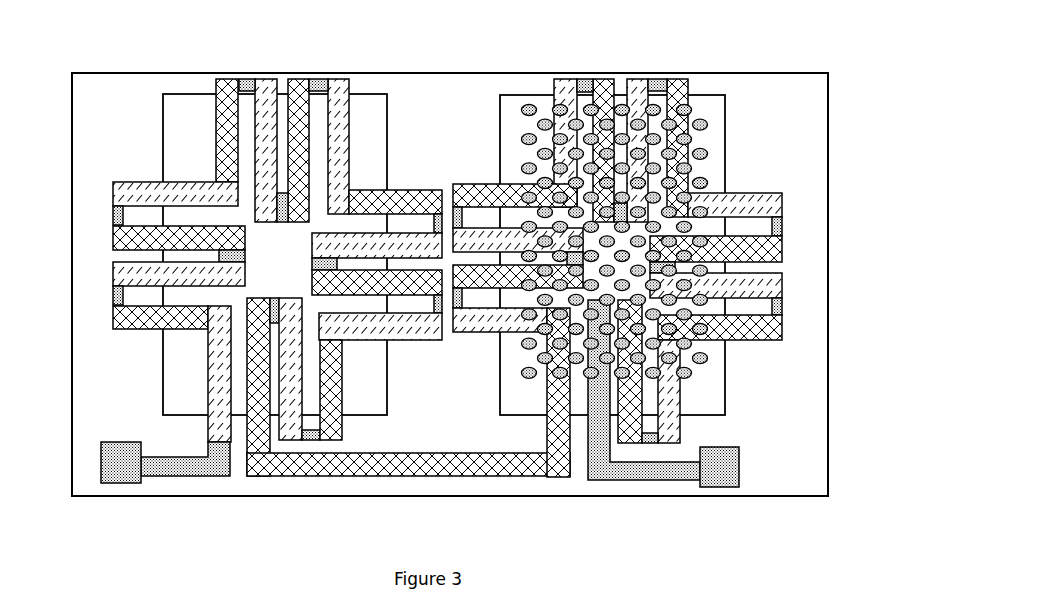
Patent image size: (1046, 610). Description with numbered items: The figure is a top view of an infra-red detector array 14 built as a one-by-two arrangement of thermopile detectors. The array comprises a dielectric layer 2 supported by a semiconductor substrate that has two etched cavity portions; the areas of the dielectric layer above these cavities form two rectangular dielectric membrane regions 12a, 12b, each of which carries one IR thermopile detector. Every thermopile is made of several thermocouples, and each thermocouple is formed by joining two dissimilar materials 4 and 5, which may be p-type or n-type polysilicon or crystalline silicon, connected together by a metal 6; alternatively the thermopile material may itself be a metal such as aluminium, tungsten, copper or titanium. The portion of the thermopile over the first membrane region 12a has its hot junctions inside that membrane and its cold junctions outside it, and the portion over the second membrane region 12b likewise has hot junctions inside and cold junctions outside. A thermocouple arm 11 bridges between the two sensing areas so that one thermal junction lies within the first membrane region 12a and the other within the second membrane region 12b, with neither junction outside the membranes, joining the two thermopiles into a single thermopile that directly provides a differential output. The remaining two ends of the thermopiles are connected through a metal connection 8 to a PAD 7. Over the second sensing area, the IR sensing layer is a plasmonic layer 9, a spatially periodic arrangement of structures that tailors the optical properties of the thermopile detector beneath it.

The dielectric layer 2 is at (812, 128).
The first thermocouple material 4 is at (128, 320).
The second thermocouple material 5 is at (425, 327).
The metal 6 is at (115, 298).
The PAD 7 is at (122, 460).
The metal connection 8 is at (198, 472).
The plasmonic layer 9 is at (528, 140).
The thermocouple arm 11 is at (392, 462).
The first dielectric membrane region 12a is at (162, 157).
The second dielectric membrane region 12b is at (500, 173).
The infra-red detector array 14 is at (842, 251).